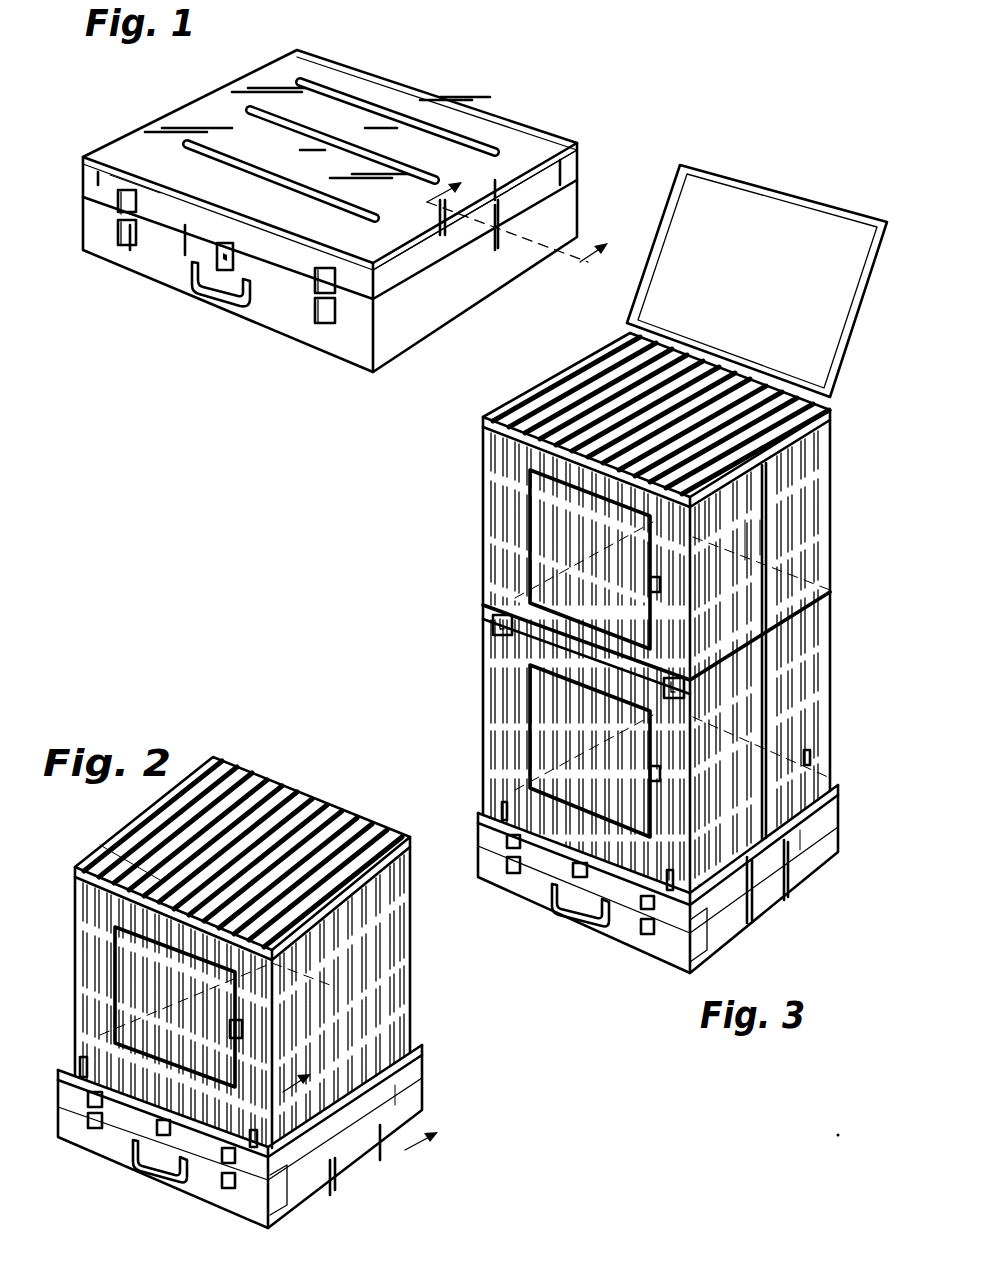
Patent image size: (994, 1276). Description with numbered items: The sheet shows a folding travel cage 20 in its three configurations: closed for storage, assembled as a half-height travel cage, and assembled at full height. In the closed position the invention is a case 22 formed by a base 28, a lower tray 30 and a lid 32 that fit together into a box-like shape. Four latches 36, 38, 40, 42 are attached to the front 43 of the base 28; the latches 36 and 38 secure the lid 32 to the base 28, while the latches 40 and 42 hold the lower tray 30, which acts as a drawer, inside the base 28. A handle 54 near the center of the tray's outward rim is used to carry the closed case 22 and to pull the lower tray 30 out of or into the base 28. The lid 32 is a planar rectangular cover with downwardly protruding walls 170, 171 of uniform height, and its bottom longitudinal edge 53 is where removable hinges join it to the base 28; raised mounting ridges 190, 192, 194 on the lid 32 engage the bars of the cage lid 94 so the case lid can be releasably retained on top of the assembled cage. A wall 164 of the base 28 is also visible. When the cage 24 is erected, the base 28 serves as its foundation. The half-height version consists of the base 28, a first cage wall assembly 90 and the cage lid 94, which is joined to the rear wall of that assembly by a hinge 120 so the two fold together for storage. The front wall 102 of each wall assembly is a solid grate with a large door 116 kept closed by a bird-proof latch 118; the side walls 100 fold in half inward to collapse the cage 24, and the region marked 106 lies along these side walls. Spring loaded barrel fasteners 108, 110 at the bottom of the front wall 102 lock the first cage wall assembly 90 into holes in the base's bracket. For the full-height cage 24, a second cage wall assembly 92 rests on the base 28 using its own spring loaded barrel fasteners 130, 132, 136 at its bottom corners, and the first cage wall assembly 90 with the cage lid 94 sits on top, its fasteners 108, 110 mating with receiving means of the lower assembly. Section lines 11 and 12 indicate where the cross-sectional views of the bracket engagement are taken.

In FIG. 1, the section line 11- 11 is at (502, 239).
In FIG. 2, the section line 12- 12 is at (379, 1095).
In FIG. 3, the folding travel cage 20 is at (470, 456).
In FIG. 2, the folding travel cage 20 is at (266, 758).
In FIG. 1, the case 22 is at (514, 105).
In FIG. 3, the case 22 is at (694, 969).
In FIG. 2, the case 22 is at (338, 1174).
In FIG. 3, the cage 24 is at (472, 575).
In FIG. 1, the base 28 is at (455, 295).
In FIG. 3, the base 28 is at (760, 900).
In FIG. 2, the base 28 is at (350, 1140).
In FIG. 1, the lower tray 30 is at (172, 273).
In FIG. 3, the lower tray 30 is at (530, 890).
In FIG. 2, the lower tray 30 is at (115, 1150).
In FIG. 1, the lid 32 is at (373, 130).
In FIG. 1, the latch 36 is at (93, 172).
In FIG. 3, the latch 36 is at (508, 840).
In FIG. 2, the latch 36 is at (92, 1100).
In FIG. 1, the latch 38 is at (313, 290).
In FIG. 3, the latch 38 is at (641, 908).
In FIG. 2, the latch 38 is at (225, 1163).
In FIG. 1, the latch 40 is at (117, 240).
In FIG. 3, the latch 40 is at (510, 868).
In FIG. 2, the latch 40 is at (95, 1127).
In FIG. 1, the latch 42 is at (323, 323).
In FIG. 3, the latch 42 is at (648, 934).
In FIG. 2, the latch 42 is at (228, 1190).
In FIG. 1, the front of the base 43 is at (177, 237).
In FIG. 3, the front of the base 43 is at (588, 880).
In FIG. 2, the front of the base 43 is at (255, 1180).
In FIG. 1, the bottom longitudinal edge 53 is at (580, 147).
In FIG. 1, the handle 54 is at (215, 300).
In FIG. 3, the handle 54 is at (568, 913).
In FIG. 2, the handle 54 is at (160, 1172).
In FIG. 3, the first cage wall assembly 90 is at (480, 438).
In FIG. 2, the first cage wall assembly 90 is at (400, 958).
In FIG. 3, the second cage wall assembly 92 is at (485, 663).
In FIG. 3, the cage lid 94 is at (780, 220).
In FIG. 2, the cage lid 94 is at (152, 820).
In FIG. 3, the side wall 100 is at (820, 525).
In FIG. 2, the side wall 100 is at (302, 920).
In FIG. 3, the front wall 102 is at (510, 503).
In FIG. 2, the front wall 102 is at (90, 950).
In FIG. 3, the side wall 106 is at (762, 597).
In FIG. 2, the side wall 106 is at (343, 985).
In FIG. 3, the spring loaded barrel fastener 108 is at (487, 625).
In FIG. 2, the spring loaded barrel fastener 108 is at (78, 1064).
In FIG. 3, the spring loaded barrel fastener 110 is at (680, 683).
In FIG. 2, the spring loaded barrel fastener 110 is at (250, 1140).
In FIG. 3, the large door 116 is at (545, 538).
In FIG. 2, the large door 116 is at (125, 1003).
In FIG. 3, the bird-proof latch 118 is at (648, 583).
In FIG. 2, the bird-proof latch 118 is at (232, 1032).
In FIG. 3, the hinge 120 is at (695, 355).
In FIG. 2, the hinge 120 is at (332, 800).
In FIG. 3, the spring loaded barrel fastener 130 is at (490, 806).
In FIG. 3, the spring loaded barrel fastener 132 is at (683, 872).
In FIG. 3, the spring loaded barrel fastener 136 is at (812, 757).
In FIG. 1, the wall of the base 164 is at (547, 217).
In FIG. 3, the wall of the base 164 is at (790, 870).
In FIG. 2, the wall of the base 164 is at (420, 1085).
In FIG. 1, the wall of the lid 170 is at (163, 193).
In FIG. 1, the side wall of the lid 171 is at (563, 173).
In FIG. 1, the raised mounting ridge 190 is at (212, 152).
In FIG. 1, the raised mounting ridge 192 is at (262, 98).
In FIG. 1, the raised mounting ridge 194 is at (338, 66).